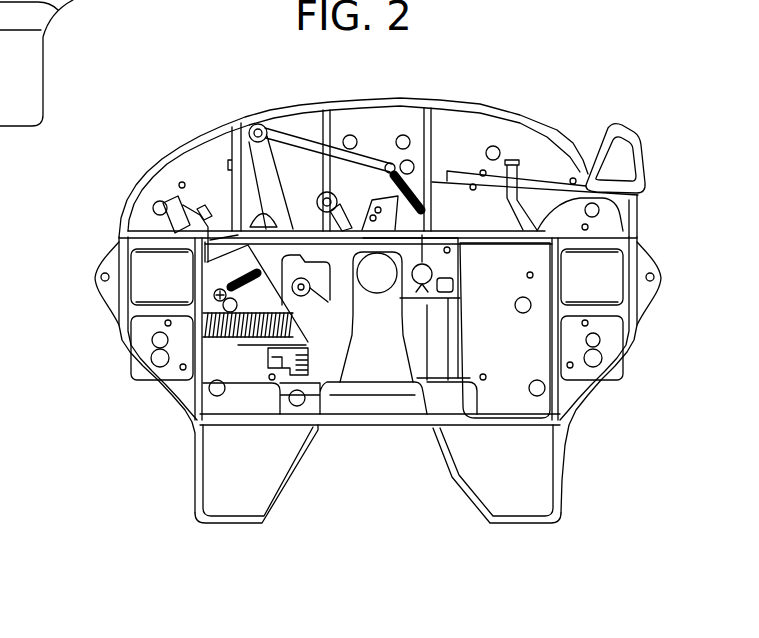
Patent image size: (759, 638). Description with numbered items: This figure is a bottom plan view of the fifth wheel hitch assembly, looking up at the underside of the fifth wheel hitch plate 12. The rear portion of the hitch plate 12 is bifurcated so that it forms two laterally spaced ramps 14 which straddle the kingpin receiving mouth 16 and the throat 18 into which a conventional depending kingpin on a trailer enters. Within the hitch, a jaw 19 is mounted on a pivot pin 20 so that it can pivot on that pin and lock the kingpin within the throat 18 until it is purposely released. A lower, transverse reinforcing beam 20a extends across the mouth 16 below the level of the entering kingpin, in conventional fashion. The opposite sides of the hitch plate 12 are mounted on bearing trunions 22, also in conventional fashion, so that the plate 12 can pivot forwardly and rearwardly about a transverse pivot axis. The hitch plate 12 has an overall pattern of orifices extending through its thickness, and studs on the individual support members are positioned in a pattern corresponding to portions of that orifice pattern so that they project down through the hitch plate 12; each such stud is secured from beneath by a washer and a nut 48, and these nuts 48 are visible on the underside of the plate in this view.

The fifth wheel hitch plate 12 is at (400, 113).
The ramps 14 is at (45, 75).
The kingpin receiving mouth 16 is at (386, 462).
The throat 18 is at (392, 377).
The jaw 19 is at (362, 300).
The pivot pin 20 is at (420, 258).
The transverse reinforcing beam 20a is at (367, 403).
The bearing trunions 22 is at (103, 281).
The nut 48 is at (180, 185).